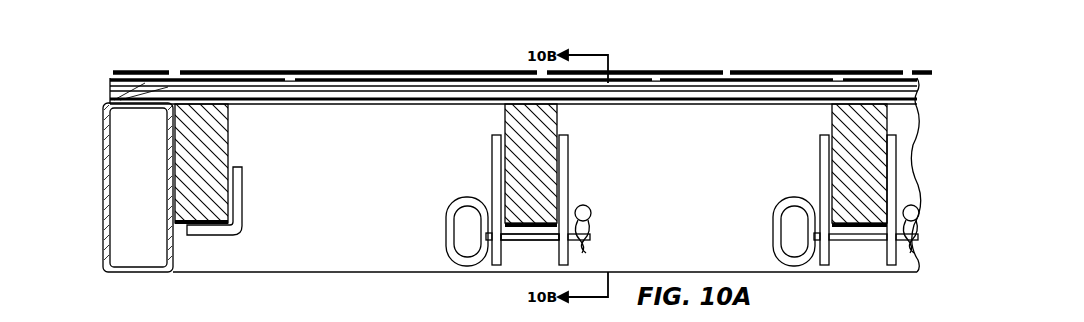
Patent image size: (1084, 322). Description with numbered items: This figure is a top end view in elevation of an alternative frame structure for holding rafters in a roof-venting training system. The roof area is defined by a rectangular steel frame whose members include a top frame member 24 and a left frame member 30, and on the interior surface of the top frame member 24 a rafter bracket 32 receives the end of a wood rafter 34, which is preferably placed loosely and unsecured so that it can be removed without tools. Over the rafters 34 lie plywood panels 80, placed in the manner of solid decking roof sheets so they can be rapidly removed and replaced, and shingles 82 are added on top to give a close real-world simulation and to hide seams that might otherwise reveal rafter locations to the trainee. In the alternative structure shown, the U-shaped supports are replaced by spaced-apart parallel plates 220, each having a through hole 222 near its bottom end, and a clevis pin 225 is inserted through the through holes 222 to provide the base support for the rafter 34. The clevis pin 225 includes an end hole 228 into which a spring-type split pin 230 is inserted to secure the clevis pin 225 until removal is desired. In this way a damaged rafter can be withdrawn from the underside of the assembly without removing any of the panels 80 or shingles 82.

The top frame member 24 is at (374, 154).
The left frame member 30 is at (104, 272).
The rafter bracket 32 is at (242, 206).
The wood rafter 34 is at (228, 139).
The plywood panel 80 is at (357, 82).
The shingles 82 is at (170, 73).
The parallel plate 220 is at (569, 166).
The through hole 222 is at (558, 243).
The clevis pin 225 is at (522, 241).
The end hole 228 is at (460, 203).
The spring-type split pin 230 is at (590, 213).